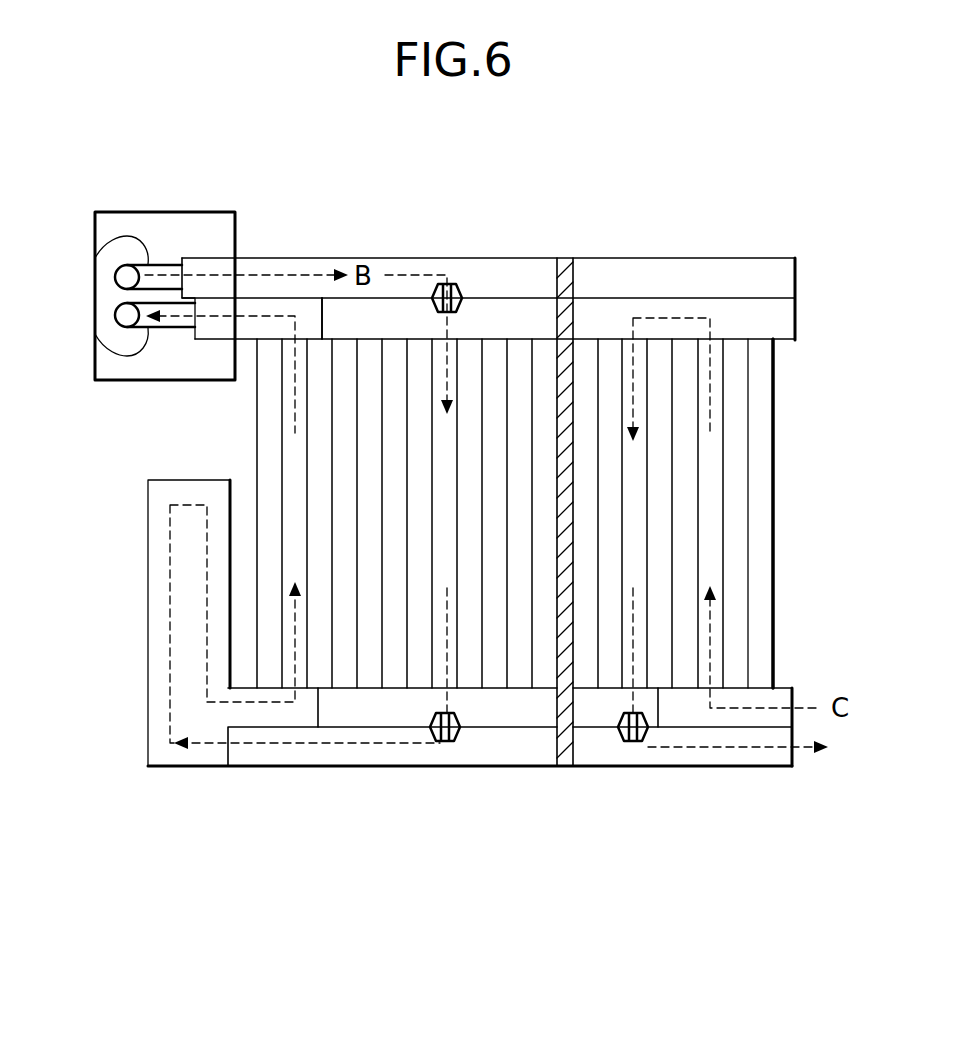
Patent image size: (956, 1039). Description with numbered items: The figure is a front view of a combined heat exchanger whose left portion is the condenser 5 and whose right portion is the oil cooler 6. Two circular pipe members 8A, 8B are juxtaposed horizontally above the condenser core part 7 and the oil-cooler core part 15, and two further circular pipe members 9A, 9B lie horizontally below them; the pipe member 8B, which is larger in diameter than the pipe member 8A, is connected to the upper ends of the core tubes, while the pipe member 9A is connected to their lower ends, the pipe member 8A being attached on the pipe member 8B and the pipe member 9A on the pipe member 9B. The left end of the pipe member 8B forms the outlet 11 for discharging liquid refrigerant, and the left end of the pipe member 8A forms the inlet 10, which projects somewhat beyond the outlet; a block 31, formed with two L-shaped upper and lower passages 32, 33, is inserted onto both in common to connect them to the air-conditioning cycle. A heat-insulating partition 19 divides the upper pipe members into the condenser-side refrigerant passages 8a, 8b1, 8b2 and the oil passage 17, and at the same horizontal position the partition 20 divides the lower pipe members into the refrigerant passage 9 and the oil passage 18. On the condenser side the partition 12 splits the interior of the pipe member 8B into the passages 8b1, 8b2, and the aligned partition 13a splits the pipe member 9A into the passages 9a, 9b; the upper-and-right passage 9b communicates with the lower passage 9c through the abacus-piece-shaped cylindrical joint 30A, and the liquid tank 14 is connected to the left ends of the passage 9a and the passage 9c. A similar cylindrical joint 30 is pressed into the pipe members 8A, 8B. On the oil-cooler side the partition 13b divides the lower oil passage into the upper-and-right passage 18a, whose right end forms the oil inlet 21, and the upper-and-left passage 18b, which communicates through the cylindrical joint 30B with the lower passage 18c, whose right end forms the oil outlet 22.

The condenser 5 is at (398, 254).
The oil cooler 6 is at (755, 249).
The condenser core part 7 is at (257, 422).
The pipe member 8A is at (495, 275).
The pipe member 8B is at (258, 307).
The upper refrigerant passage 8a is at (532, 276).
The refrigerant passage 8b1 is at (467, 320).
The refrigerant passage 8b2 is at (285, 304).
The refrigerant passage 9 is at (423, 832).
The pipe member 9A is at (518, 712).
The pipe member 9B is at (242, 767).
The refrigerant passage 9a is at (283, 717).
The upper-and-right passage 9b is at (395, 718).
The lower passage 9c is at (337, 757).
The inlet 10 is at (170, 257).
The outlet 11 is at (188, 322).
The partition 12 is at (320, 315).
The partition 13a is at (320, 720).
The partition 13b is at (667, 703).
The liquid tank 14 is at (148, 590).
The oil-cooler core part 15 is at (773, 470).
The oil passage 17 is at (795, 290).
The oil passage 18 is at (572, 840).
The upper-and-right passage 18a is at (682, 718).
The upper-and-left passage 18b is at (593, 723).
The lower passage 18c is at (633, 760).
The partition 19 is at (575, 293).
The partition 20 is at (545, 770).
The inlet 21 is at (792, 698).
The outlet 22 is at (792, 760).
The cylindrical joint 30 is at (430, 290).
The cylindrical joint 30A is at (462, 737).
The cylindrical joint 30B is at (655, 705).
The block 31 is at (118, 212).
The passage 32 is at (95, 258).
The passage 33 is at (95, 334).